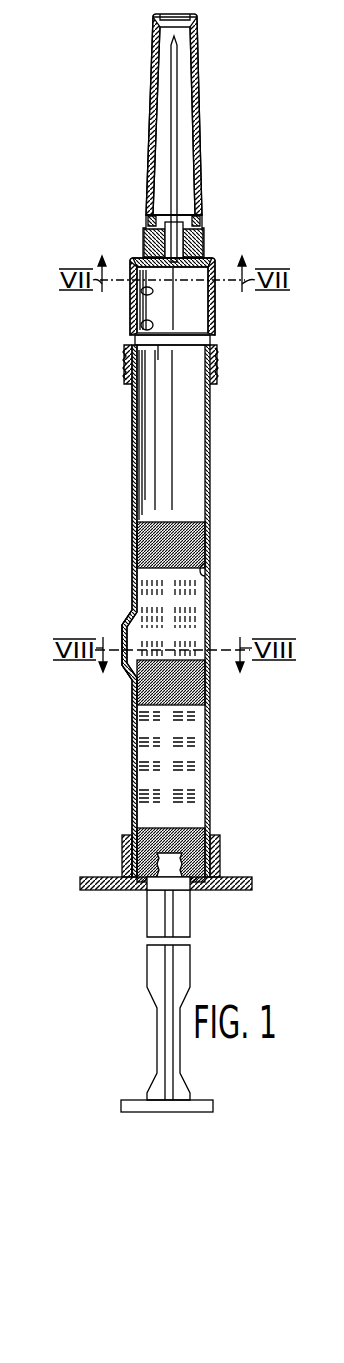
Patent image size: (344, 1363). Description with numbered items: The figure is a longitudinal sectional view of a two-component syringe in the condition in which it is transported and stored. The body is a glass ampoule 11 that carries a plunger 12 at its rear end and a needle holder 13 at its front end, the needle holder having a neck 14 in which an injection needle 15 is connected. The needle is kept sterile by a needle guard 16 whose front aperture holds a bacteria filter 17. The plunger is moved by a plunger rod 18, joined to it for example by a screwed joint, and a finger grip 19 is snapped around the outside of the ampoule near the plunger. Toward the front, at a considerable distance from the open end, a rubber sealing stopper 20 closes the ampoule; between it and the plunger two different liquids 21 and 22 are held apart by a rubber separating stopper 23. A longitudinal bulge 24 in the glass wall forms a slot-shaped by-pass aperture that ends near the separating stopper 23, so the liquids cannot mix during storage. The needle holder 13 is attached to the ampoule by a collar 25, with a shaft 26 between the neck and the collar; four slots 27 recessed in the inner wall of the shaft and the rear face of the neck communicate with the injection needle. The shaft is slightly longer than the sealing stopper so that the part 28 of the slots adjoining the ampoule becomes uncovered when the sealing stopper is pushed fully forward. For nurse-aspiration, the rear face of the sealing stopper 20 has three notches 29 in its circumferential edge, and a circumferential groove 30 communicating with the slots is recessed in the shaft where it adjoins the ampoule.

The ampoule 11 is at (208, 438).
The plunger 12 is at (190, 835).
The needle holder 13 is at (121, 254).
The neck 14 is at (204, 236).
The injection needle 15 is at (175, 163).
The needle guard 16 is at (200, 98).
The bacteria filter 17 is at (178, 14).
The plunger rod 18 is at (183, 926).
The finger grip 19 is at (226, 884).
The sealing stopper 20 is at (185, 530).
The liquid 21 is at (182, 611).
The liquid 22 is at (188, 752).
The separating stopper 23 is at (190, 690).
The longitudinal bulge 24 is at (123, 640).
The collar 25 is at (218, 374).
The shaft 26 is at (215, 290).
The slots 27 is at (148, 291).
The part of the slots 28 is at (148, 325).
The notches 29 is at (206, 573).
The circumferential groove 30 is at (158, 345).